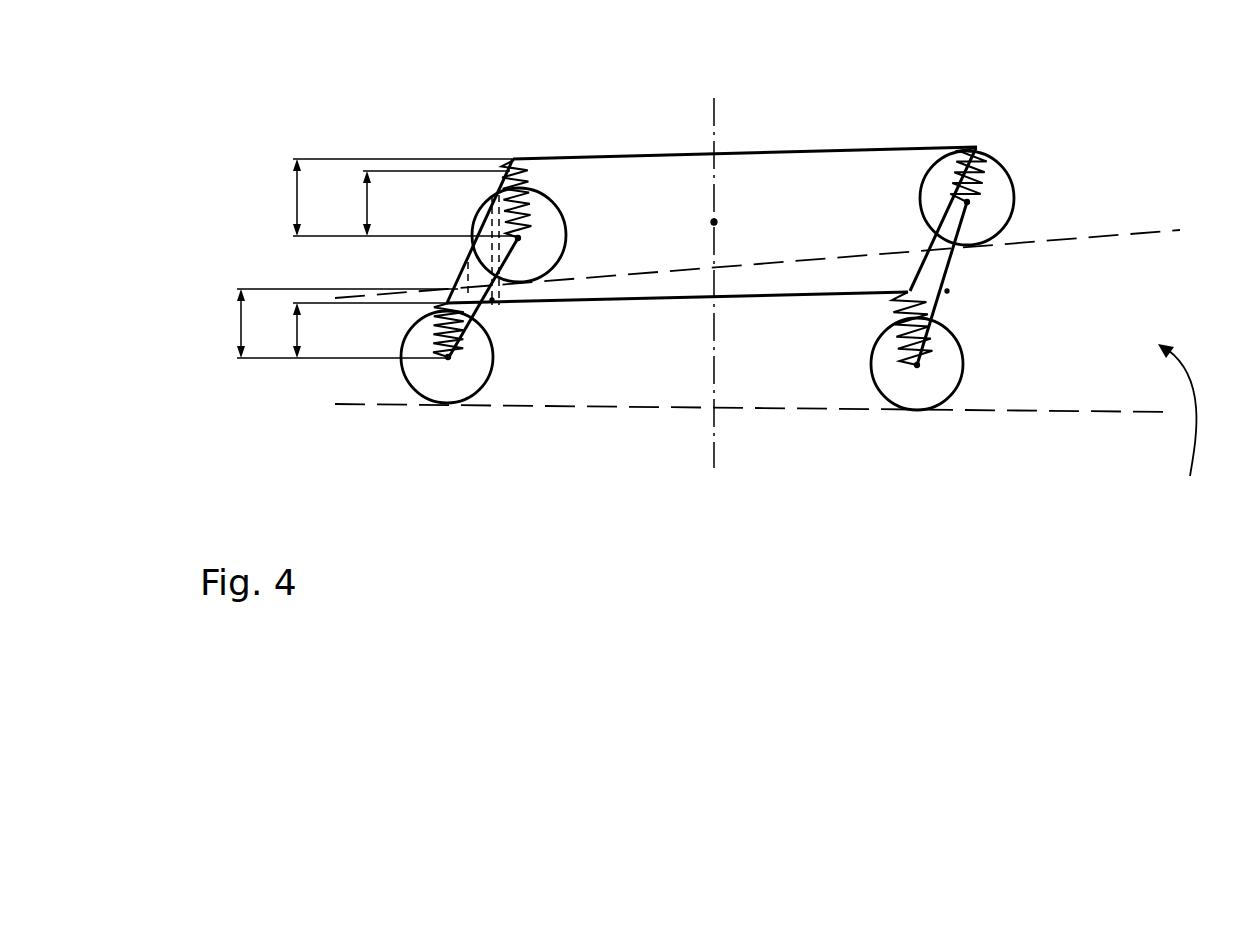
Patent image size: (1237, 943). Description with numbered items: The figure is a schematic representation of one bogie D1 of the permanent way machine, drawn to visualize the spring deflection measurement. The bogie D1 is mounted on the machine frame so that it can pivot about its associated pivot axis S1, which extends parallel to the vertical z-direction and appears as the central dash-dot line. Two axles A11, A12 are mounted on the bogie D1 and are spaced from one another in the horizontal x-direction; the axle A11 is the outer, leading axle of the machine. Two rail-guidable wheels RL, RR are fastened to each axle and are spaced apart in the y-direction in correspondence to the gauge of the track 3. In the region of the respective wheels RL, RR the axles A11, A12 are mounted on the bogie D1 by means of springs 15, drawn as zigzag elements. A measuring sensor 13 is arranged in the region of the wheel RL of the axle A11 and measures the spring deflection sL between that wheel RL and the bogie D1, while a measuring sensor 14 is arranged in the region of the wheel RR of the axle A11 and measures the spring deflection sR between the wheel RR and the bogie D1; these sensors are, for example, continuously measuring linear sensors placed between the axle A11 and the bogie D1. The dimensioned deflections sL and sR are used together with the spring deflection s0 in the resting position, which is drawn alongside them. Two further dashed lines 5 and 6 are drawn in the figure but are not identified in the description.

The track 3 is at (1181, 429).
The roadway / ground line 5 is at (1083, 413).
The axle line 6 is at (1088, 235).
The measuring sensor 13 is at (487, 300).
The measuring sensor 14 is at (477, 217).
The springs 15 is at (515, 160).
The rail-guidable wheel RR is at (543, 212).
The rail-guidable wheel RL is at (435, 388).
The pivot axis S1 is at (714, 167).
The bogie D1 is at (832, 148).
The axle A11 is at (492, 297).
The axle A12 is at (947, 290).
The spring deflection sR is at (391, 197).
The spring deflection sL is at (352, 330).
The spring deflection in the resting position s0 is at (357, 264).